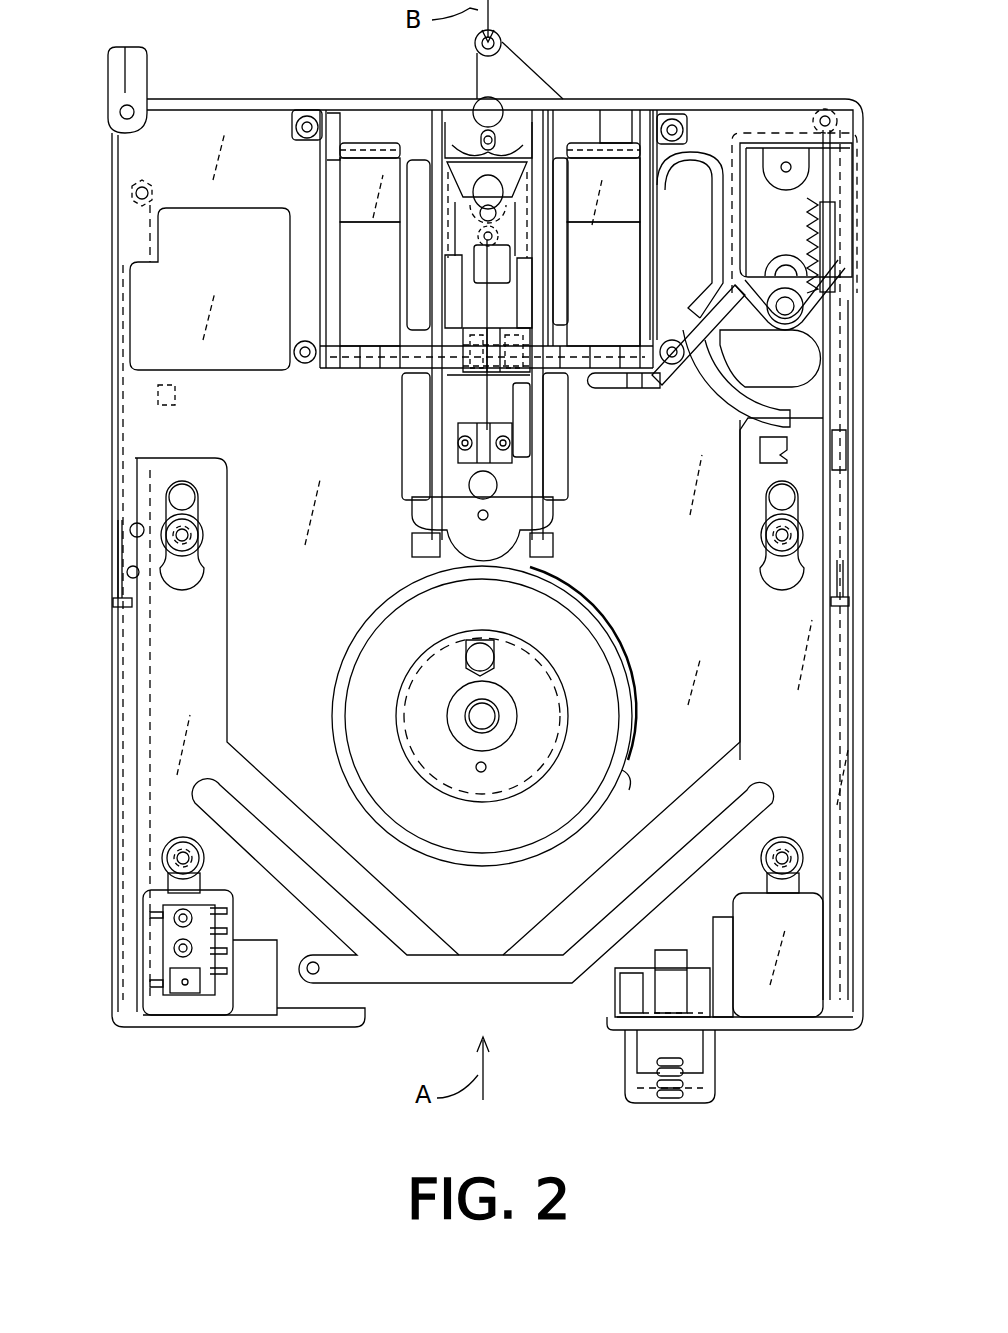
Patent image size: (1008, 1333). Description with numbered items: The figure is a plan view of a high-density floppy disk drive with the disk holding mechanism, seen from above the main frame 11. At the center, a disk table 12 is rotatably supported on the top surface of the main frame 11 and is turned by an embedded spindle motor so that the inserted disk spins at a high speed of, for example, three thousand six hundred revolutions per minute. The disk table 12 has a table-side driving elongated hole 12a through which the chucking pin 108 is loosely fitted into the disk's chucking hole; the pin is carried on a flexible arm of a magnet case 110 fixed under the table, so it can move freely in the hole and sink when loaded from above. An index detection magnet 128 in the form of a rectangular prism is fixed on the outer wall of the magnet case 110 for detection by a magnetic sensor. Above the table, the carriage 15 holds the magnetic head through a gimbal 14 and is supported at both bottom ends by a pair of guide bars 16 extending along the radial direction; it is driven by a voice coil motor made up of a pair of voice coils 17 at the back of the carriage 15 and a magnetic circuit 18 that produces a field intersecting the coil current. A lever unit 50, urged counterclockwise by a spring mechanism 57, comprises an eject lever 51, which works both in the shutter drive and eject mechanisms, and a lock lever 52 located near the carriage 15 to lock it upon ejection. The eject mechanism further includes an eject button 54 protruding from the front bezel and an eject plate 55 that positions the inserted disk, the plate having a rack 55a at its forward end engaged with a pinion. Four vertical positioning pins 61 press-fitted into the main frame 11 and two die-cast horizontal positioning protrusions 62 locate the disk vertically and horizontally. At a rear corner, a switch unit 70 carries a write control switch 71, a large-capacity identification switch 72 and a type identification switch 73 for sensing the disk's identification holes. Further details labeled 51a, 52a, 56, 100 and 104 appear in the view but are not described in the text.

The main frame 11 is at (257, 1030).
The disk table 12 is at (560, 667).
The table-side driving elongated hole 12a is at (465, 647).
The gimbal 14 is at (503, 447).
The carriage 15 is at (513, 405).
The guide bars 16 is at (402, 468).
The voice coils 17 is at (323, 230).
The magnetic circuit 18 is at (345, 375).
The lever unit 50 is at (697, 292).
The eject lever 51 is at (673, 377).
The lever end 51a is at (585, 380).
The lock lever 52 is at (698, 177).
The guide strip end 52a is at (643, 123).
The eject button 54 is at (675, 1105).
The eject plate 55 is at (750, 648).
The rack 55a is at (808, 203).
The stopper 56 is at (128, 603).
The spring mechanism 57 is at (767, 322).
The vertical positioning pins 61 is at (183, 535).
The horizontal positioning protrusions 62 is at (180, 498).
The switch unit 70 is at (203, 1000).
The write control switch 71 is at (183, 987).
The large-capacity identification switch 72 is at (183, 948).
The type identification switch 73 is at (183, 918).
The disc tray frame 100 is at (318, 690).
The spindle hub 104 is at (490, 718).
The chucking pin 108 is at (483, 658).
The magnet case 110 is at (627, 747).
The index detection magnet 128 is at (627, 777).